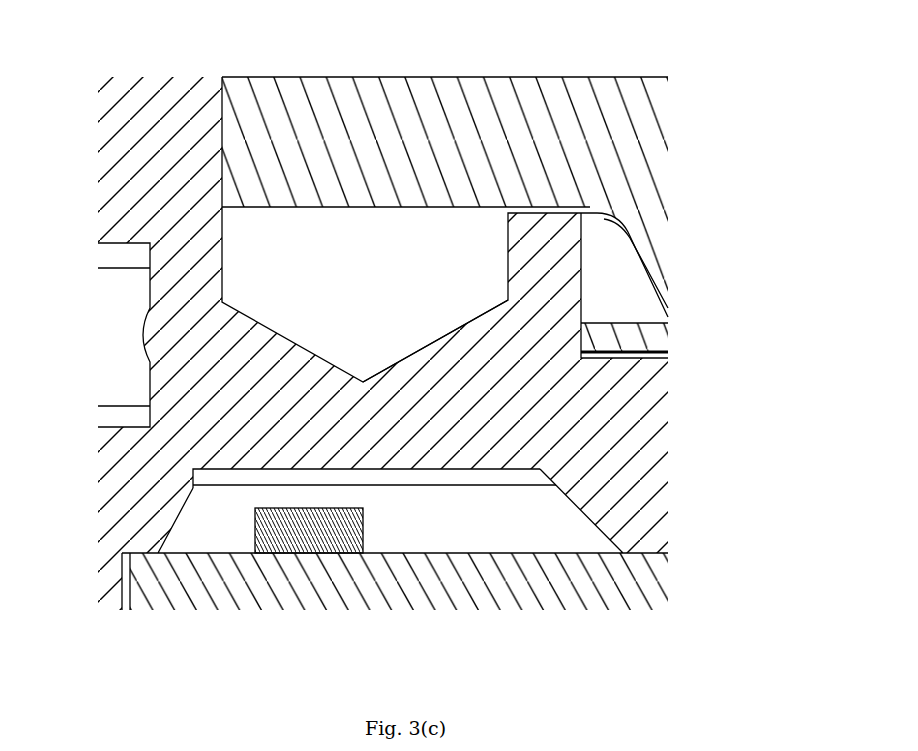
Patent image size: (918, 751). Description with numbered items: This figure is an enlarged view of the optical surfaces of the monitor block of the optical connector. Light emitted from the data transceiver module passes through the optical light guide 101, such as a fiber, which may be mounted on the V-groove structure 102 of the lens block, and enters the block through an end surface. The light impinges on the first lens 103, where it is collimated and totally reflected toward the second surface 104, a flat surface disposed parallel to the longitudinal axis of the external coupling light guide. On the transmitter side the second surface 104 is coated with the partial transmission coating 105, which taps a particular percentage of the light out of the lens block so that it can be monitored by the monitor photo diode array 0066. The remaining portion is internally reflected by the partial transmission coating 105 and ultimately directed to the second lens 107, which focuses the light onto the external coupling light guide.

The optical light guide 101 is at (655, 332).
The V-groove structure 102 is at (667, 362).
The first lens 103 is at (430, 345).
The second surface 104 is at (382, 468).
The partial transmission coating 105 is at (360, 489).
The monitor photo diode array 0066 is at (290, 510).
The second lens 107 is at (312, 352).